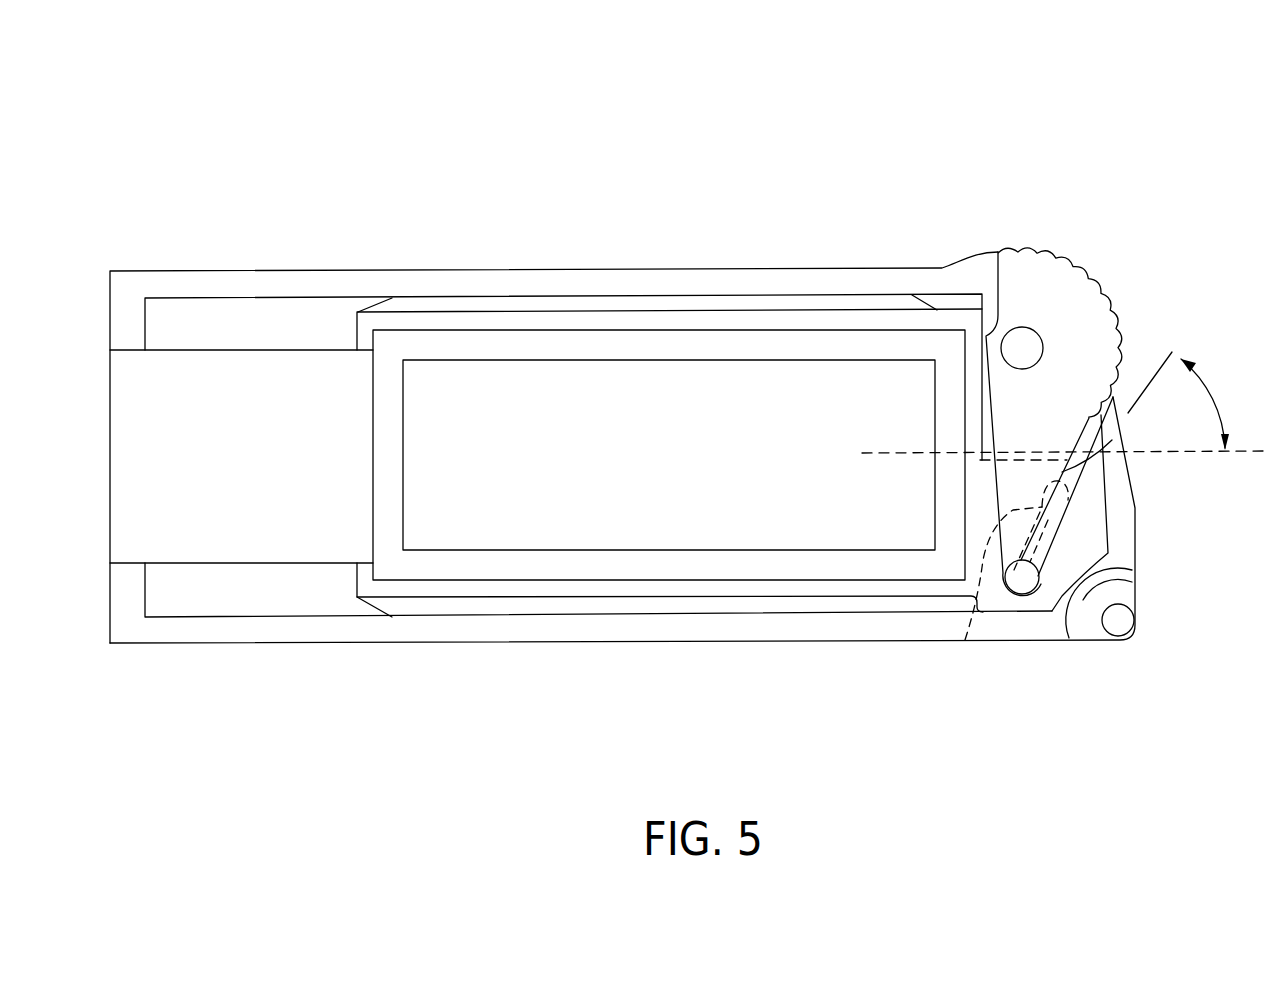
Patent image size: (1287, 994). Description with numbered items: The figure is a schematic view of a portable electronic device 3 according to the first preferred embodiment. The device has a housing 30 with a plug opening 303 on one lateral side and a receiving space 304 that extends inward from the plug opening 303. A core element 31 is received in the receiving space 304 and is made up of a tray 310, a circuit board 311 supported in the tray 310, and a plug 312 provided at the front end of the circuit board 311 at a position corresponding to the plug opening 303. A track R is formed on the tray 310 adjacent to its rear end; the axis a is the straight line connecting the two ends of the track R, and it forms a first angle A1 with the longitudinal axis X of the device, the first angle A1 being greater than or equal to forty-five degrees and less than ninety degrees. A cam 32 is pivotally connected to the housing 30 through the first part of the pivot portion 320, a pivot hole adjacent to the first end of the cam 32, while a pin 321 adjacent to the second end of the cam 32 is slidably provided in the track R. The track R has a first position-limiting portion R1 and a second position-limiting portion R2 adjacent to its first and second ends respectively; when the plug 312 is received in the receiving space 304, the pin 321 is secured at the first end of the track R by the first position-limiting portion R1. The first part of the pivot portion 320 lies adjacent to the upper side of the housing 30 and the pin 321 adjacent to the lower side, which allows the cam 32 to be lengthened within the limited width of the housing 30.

The portable electronic device 3 is at (1222, 100).
The housing 30 is at (228, 628).
The plug opening 303 is at (132, 565).
The receiving space 304 is at (325, 595).
The core element 31 is at (643, 202).
The tray 310 is at (460, 320).
The circuit board 311 is at (612, 385).
The plug 312 is at (296, 385).
The cam 32 is at (1071, 431).
The first part of the pivot portion 320 is at (1023, 348).
The pin 321 is at (1012, 605).
The track R is at (1077, 508).
The first position-limiting portion R1 is at (1040, 578).
The second position-limiting portion R2 is at (967, 642).
The axis a is at (1172, 352).
The first angle A1 is at (1214, 404).
The longitudinal axis X is at (1074, 453).